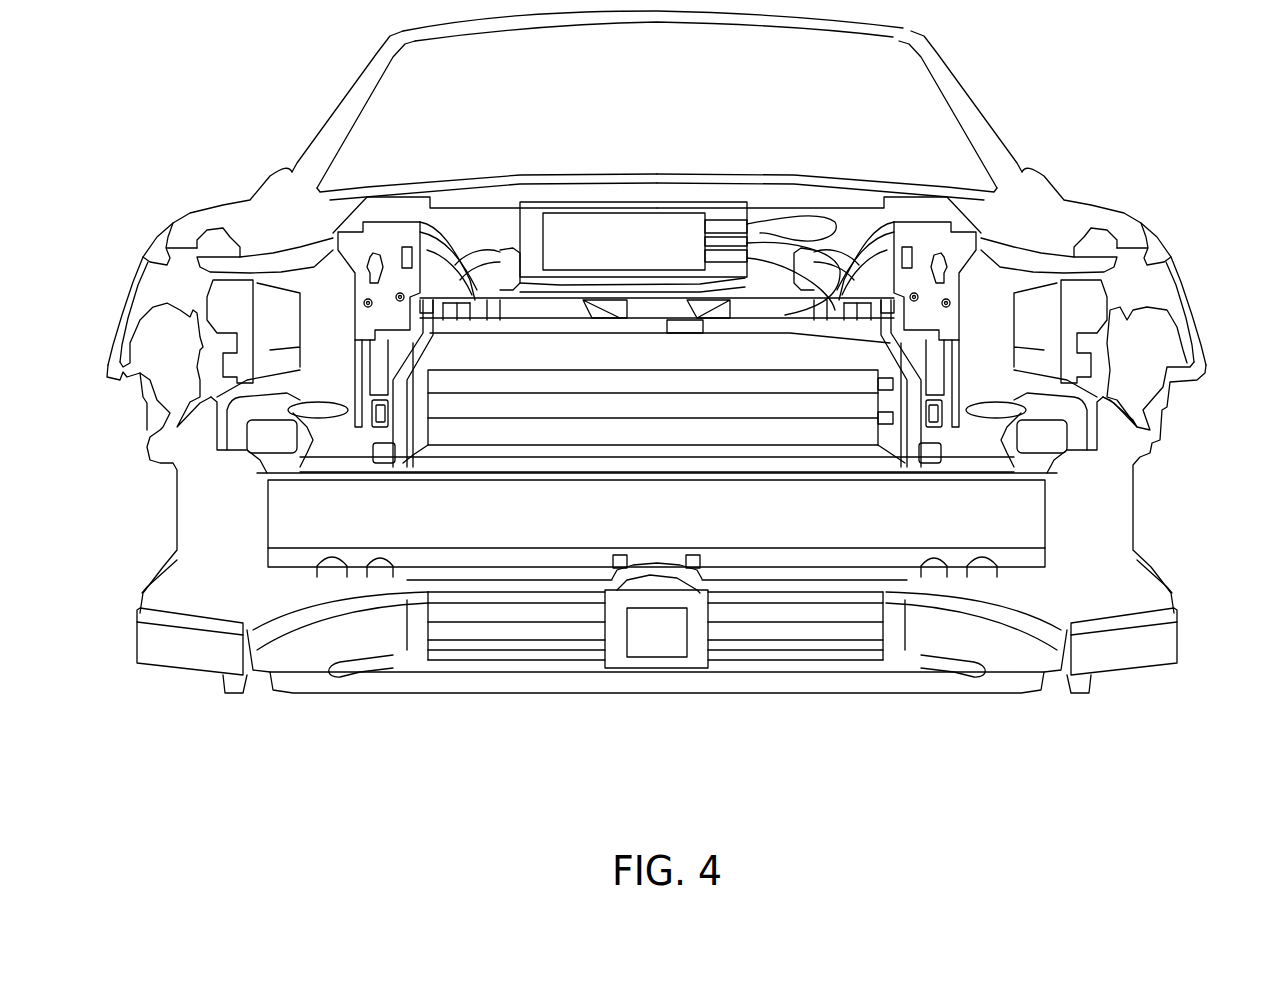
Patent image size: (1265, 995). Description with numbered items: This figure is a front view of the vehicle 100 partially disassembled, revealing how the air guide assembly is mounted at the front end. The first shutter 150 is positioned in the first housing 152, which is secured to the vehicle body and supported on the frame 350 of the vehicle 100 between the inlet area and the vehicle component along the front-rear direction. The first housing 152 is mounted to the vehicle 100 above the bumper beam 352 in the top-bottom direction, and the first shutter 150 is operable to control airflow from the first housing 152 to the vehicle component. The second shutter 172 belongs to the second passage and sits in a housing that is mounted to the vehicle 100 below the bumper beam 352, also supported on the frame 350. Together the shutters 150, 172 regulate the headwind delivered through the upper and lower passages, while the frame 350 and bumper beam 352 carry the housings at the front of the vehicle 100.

The vehicle 100 is at (1060, 100).
The first shutter 150 is at (770, 370).
The first housing 152 is at (355, 338).
The second shutter 172 is at (780, 647).
The frame 350 is at (930, 452).
The bumper beam 352 is at (492, 515).